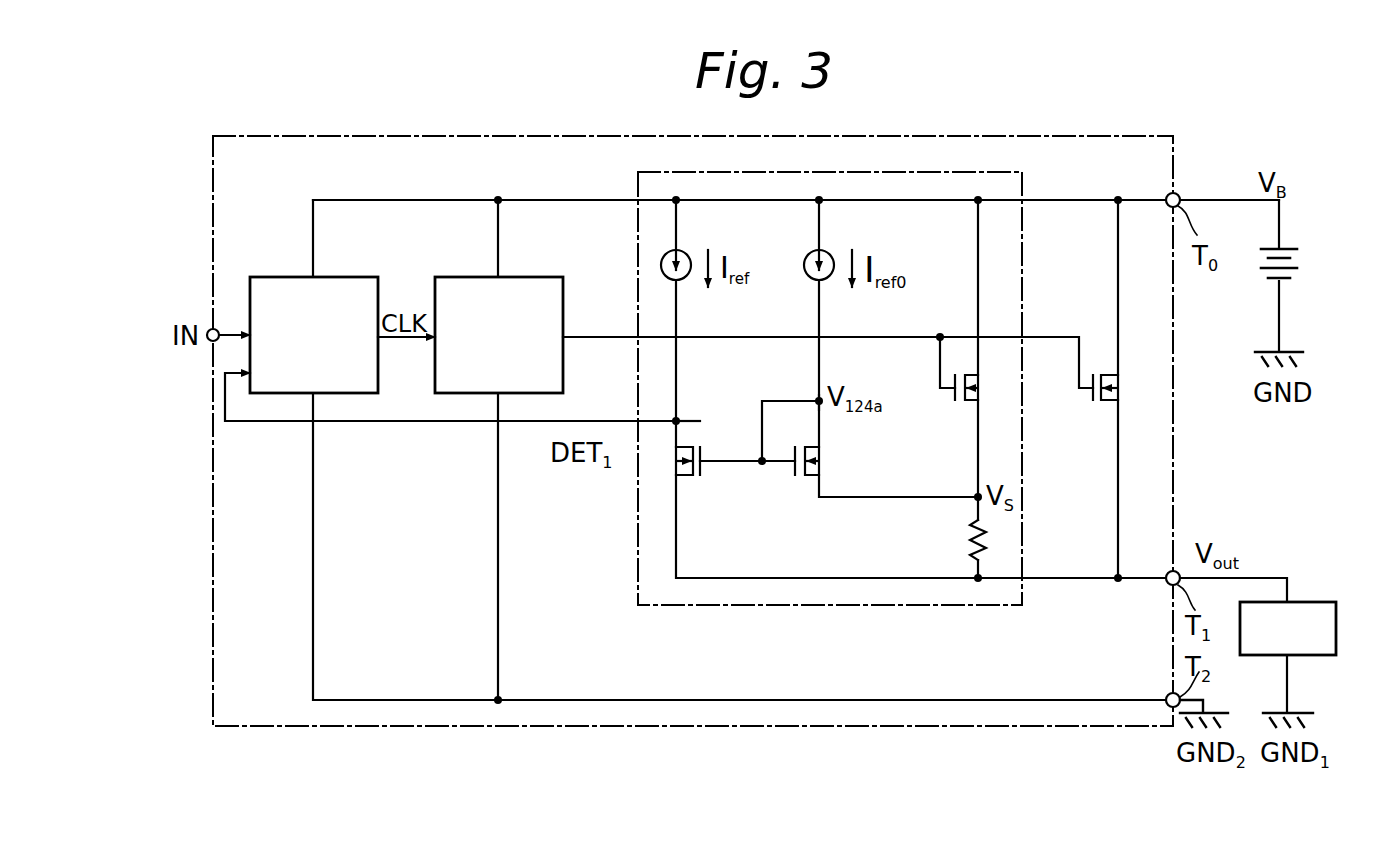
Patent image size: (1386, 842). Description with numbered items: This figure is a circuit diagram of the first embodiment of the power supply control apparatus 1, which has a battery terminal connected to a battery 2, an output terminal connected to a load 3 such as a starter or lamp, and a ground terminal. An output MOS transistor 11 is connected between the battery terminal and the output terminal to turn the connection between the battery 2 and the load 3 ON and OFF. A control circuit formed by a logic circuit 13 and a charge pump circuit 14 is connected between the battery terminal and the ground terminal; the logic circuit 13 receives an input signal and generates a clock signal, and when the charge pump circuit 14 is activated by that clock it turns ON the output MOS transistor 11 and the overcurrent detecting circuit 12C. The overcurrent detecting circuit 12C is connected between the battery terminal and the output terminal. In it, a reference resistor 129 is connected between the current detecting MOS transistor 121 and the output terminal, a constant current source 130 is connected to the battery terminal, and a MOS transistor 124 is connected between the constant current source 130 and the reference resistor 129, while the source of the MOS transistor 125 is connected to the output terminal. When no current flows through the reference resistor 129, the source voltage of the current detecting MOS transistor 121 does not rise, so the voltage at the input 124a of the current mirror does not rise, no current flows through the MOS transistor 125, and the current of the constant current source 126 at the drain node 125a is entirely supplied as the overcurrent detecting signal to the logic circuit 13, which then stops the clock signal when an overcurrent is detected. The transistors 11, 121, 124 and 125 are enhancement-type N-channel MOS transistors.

The power supply control apparatus 1 is at (1020, 136).
The battery 2 is at (1292, 262).
The load 3 is at (1302, 602).
The output MOS transistor 11 is at (1116, 382).
The overcurrent detecting circuit 12C is at (1020, 174).
The logic circuit 13 is at (340, 277).
The charge pump circuit 14 is at (525, 277).
The current detecting MOS transistor 121 is at (964, 406).
The MOS transistor 124 is at (812, 452).
The input of the current mirror circuit 124a is at (822, 407).
The MOS transistor 125 is at (690, 478).
The drain node of MOS transistor 125 125a is at (714, 404).
The constant current source 126 is at (688, 250).
The reference resistor 129 is at (970, 536).
The constant current source 130 is at (831, 250).